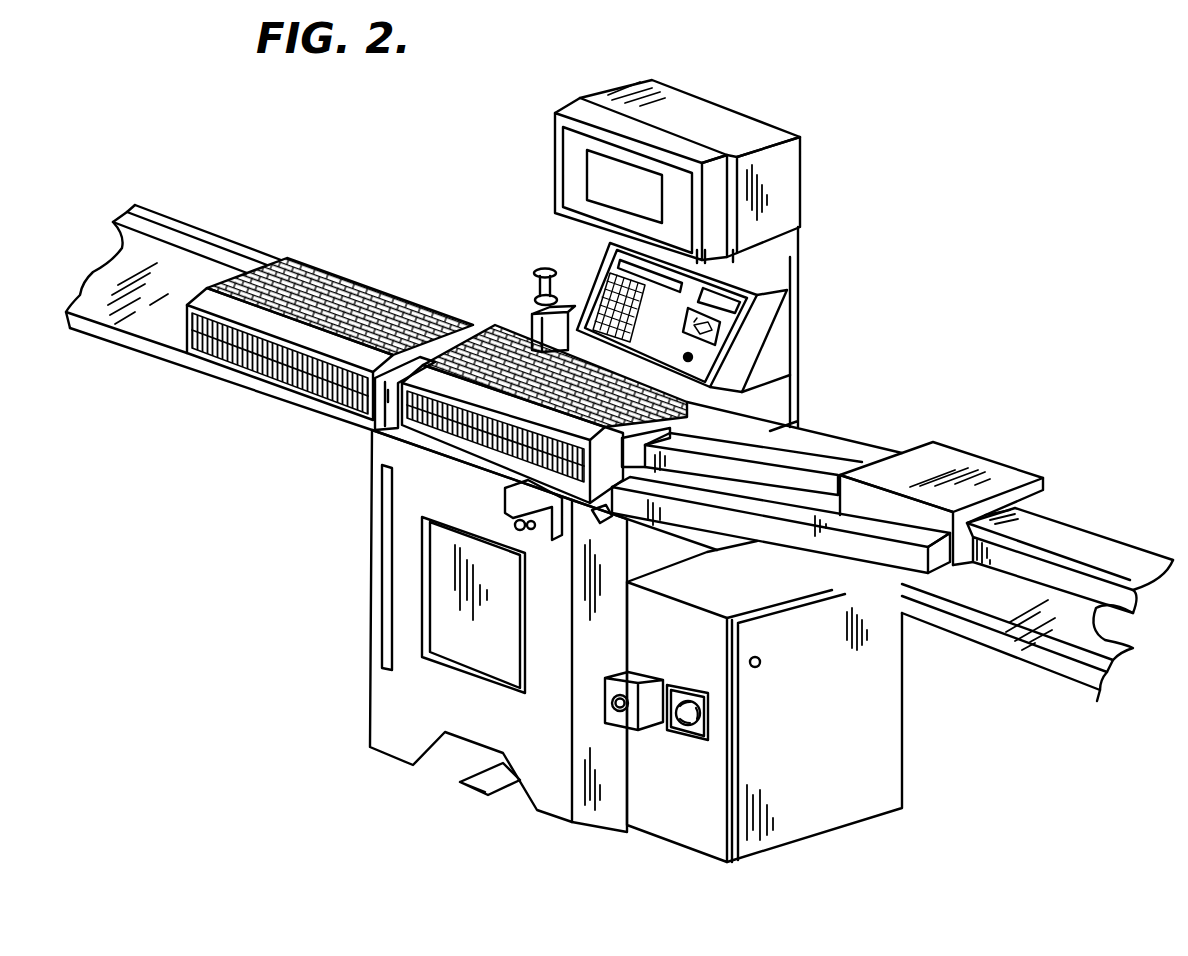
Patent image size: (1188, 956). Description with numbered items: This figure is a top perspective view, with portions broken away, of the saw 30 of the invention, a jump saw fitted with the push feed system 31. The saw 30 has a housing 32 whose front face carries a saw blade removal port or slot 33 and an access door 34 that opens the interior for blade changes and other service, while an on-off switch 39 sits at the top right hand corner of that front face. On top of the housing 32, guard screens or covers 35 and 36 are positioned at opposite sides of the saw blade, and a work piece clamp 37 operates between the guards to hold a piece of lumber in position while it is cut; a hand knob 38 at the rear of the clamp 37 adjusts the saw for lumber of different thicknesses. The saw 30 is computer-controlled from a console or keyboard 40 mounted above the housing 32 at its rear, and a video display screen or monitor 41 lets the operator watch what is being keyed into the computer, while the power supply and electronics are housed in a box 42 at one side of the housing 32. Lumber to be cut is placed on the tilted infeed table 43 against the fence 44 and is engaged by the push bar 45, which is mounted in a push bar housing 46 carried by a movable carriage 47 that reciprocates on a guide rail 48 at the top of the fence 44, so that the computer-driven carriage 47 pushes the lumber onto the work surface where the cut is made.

The saw 30 is at (328, 671).
The push feed system 31 is at (914, 478).
The housing 32 is at (372, 562).
The saw blade removal port or slot 33 is at (382, 612).
The access door 34 is at (480, 640).
The guard screen or cover 35 is at (378, 300).
The guard screen or cover 36 is at (450, 443).
The work piece clamp 37 is at (428, 347).
The hand knob 38 is at (537, 270).
The on-off switch 39 is at (540, 540).
The console or keyboard 40 is at (610, 290).
The video display screen or monitor 41 is at (603, 175).
The box 42 is at (658, 827).
The tilted infeed table 43 is at (985, 595).
The fence 44 is at (1116, 648).
The push bar 45 is at (703, 458).
The push bar housing 46 is at (793, 515).
The movable carriage 47 is at (1040, 478).
The guide rail 48 is at (1073, 548).